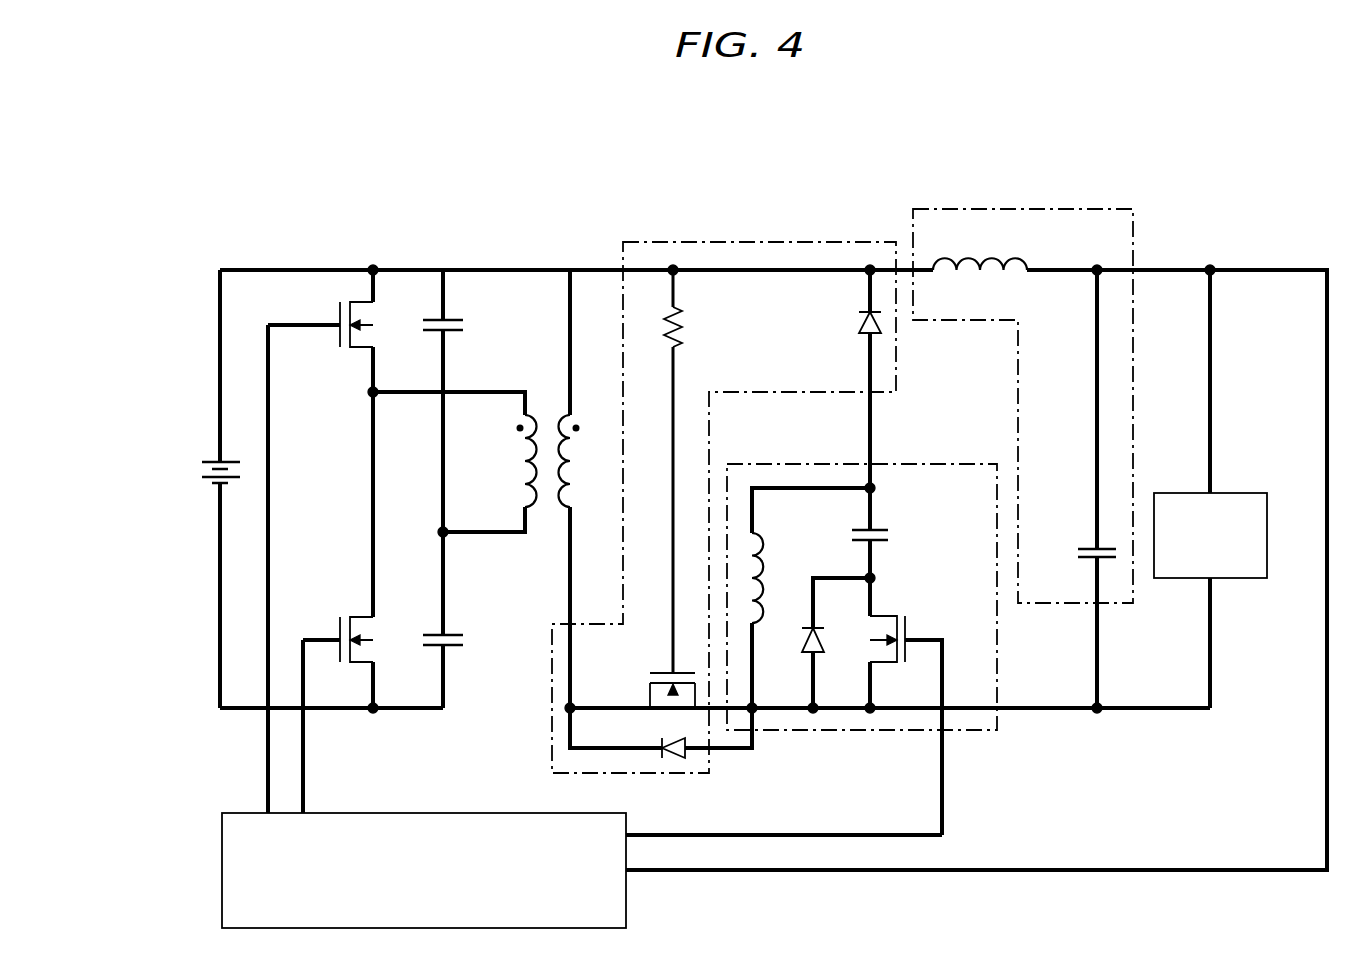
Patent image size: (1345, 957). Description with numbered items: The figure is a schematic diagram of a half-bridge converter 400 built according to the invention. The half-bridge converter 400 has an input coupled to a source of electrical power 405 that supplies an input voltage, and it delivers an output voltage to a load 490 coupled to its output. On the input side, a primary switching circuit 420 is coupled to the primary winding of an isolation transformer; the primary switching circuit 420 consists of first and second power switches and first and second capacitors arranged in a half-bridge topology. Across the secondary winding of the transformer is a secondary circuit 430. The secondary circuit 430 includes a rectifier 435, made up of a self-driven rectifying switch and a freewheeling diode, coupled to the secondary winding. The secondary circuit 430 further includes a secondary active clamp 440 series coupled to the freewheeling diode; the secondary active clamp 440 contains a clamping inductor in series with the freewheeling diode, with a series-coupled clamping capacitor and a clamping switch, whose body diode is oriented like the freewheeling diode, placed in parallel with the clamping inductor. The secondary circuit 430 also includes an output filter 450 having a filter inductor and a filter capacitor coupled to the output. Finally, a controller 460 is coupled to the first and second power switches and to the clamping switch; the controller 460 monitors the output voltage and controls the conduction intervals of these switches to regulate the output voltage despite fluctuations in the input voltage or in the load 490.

The half-bridge converter 400 is at (546, 192).
The source of electrical power 405 is at (200, 470).
The primary switching circuit 420 is at (487, 190).
The secondary circuit 430 is at (1140, 190).
The rectifier 435 is at (896, 376).
The secondary active clamp 440 is at (862, 649).
The output filter 450 is at (1023, 458).
The controller 460 is at (582, 870).
The load 490 is at (1210, 489).